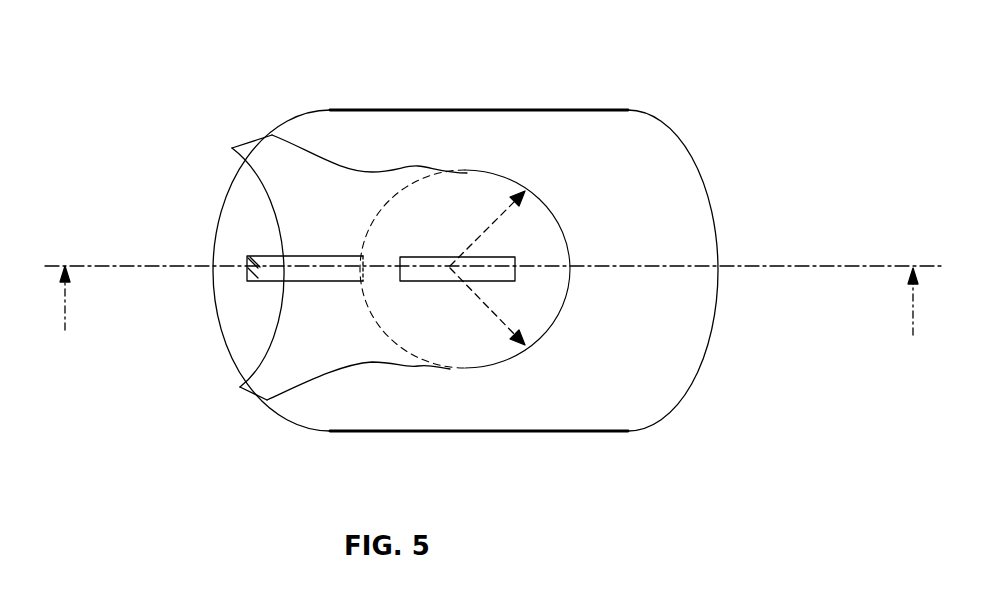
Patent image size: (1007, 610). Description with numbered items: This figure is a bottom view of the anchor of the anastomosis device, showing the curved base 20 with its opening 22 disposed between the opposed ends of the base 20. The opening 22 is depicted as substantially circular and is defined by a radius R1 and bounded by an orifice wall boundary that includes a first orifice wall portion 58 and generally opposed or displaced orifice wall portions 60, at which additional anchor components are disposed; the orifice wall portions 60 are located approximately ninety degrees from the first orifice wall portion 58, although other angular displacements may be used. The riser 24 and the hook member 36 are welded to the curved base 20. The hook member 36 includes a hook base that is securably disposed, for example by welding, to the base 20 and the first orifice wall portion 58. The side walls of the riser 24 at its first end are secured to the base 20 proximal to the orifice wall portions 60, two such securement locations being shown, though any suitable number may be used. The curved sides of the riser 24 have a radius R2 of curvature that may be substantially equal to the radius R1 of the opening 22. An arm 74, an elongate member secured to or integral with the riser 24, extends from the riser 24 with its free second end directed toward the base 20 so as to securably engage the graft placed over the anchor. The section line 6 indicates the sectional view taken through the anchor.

The base 20 is at (673, 215).
The opening 22 is at (528, 228).
The riser 24 is at (260, 338).
The hook member 36 is at (252, 254).
The first orifice wall portion 58 is at (367, 267).
The second orifice wall portion 60 is at (467, 173).
The arm 74 is at (493, 280).
The section line 6- 6 is at (484, 300).
The radius of the opening R1 is at (487, 306).
The radius of curvature of the riser sides R2 is at (487, 228).